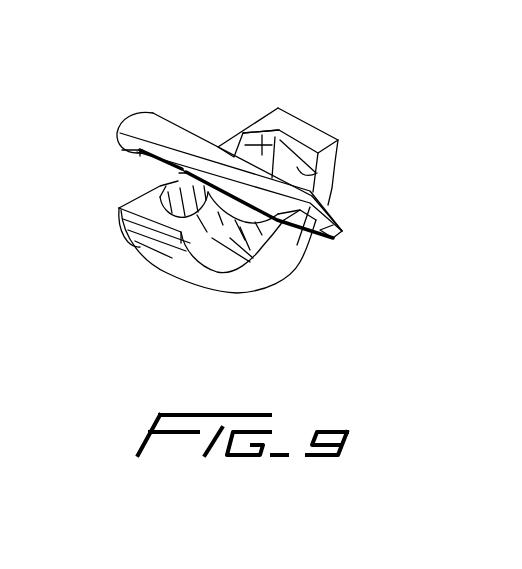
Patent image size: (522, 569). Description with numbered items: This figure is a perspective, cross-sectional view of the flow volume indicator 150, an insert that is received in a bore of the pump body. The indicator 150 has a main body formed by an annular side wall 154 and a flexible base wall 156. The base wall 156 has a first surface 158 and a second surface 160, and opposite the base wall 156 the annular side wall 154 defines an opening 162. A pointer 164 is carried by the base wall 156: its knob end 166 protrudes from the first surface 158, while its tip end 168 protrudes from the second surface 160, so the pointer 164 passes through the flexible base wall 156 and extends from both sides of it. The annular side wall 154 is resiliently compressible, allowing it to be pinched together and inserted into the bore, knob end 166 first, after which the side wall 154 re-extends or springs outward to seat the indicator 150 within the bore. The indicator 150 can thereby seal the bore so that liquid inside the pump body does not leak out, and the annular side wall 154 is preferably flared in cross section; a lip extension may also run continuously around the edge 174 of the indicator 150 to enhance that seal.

The flow volume indicator 150 is at (274, 78).
The annular side wall 154 is at (160, 248).
The flexible base wall 156 is at (260, 250).
The first surface 158 is at (165, 196).
The second surface 160 is at (262, 130).
The opening 162 is at (300, 172).
The pointer 164 is at (298, 235).
The knob end 166 is at (130, 122).
The tip end 168 is at (325, 227).
The edge 174 is at (337, 139).